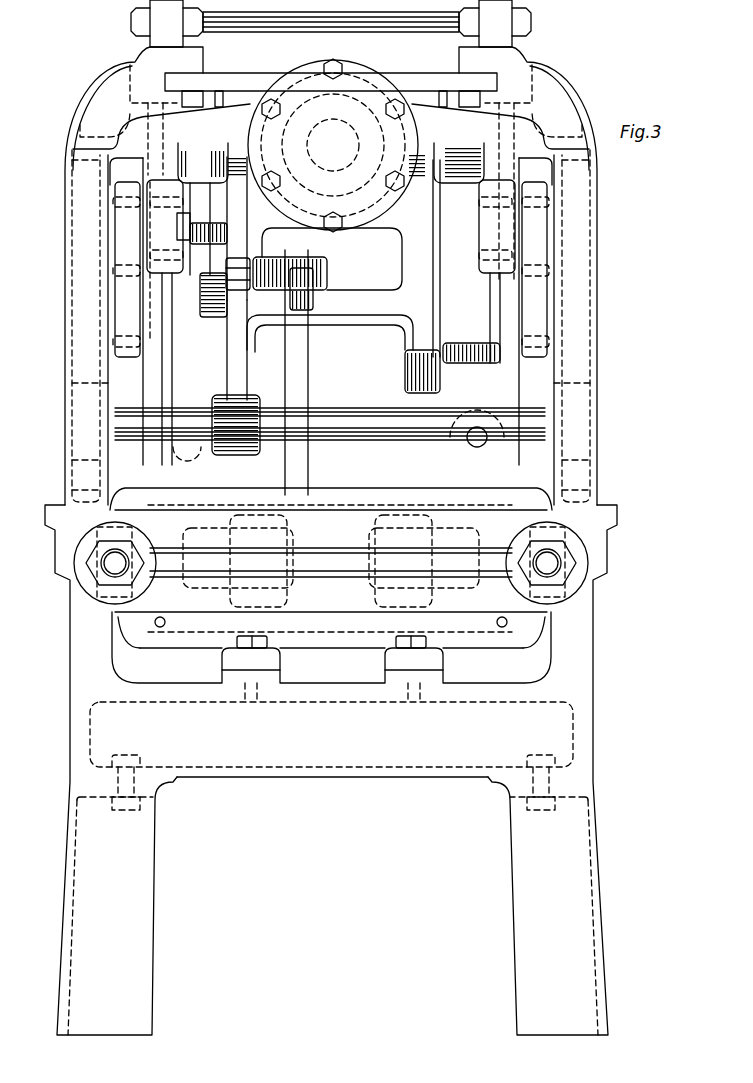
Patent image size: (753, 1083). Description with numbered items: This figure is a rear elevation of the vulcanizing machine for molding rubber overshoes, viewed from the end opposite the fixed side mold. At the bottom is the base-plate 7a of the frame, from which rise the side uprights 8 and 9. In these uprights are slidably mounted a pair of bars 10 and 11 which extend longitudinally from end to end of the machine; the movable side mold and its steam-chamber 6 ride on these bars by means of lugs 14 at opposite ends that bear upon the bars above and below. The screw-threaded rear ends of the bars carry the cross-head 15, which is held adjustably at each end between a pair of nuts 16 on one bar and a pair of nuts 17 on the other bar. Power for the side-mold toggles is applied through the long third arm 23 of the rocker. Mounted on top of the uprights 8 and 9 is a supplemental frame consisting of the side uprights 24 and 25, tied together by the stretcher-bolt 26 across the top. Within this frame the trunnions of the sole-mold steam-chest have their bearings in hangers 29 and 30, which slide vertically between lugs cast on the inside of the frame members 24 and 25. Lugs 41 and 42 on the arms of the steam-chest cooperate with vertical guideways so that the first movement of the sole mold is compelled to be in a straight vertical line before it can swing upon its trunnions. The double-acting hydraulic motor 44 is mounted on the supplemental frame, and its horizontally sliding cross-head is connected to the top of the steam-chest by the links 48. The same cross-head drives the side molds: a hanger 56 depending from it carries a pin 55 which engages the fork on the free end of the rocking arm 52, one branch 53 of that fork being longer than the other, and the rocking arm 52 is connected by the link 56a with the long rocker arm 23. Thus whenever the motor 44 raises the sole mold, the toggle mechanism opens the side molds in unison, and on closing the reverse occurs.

The stretcher-bolt 26 is at (392, 30).
The double-acting hydraulic motor 44 is at (302, 86).
The side upright 24 is at (77, 366).
The side upright 25 is at (583, 376).
The lug 41 is at (152, 256).
The lug 42 is at (513, 255).
The hanger 30 is at (490, 300).
The links 48 is at (398, 198).
The pin 55 is at (222, 222).
The fork branch 53 is at (240, 236).
The rocking arm 52 is at (230, 333).
The hanger 56 is at (205, 244).
The hanger 29 is at (172, 304).
The link 56a is at (305, 240).
The third arm of the rocker 23 is at (308, 346).
The cross-head 15 is at (331, 568).
The nuts 17 is at (90, 553).
The nuts 16 is at (566, 562).
The bar 10 is at (95, 592).
The bar 11 is at (570, 591).
The side upright 8 is at (70, 648).
The side upright 9 is at (590, 645).
The steam-chamber 6 is at (331, 647).
The lugs 14 is at (118, 508).
The base-plate 7a is at (336, 694).